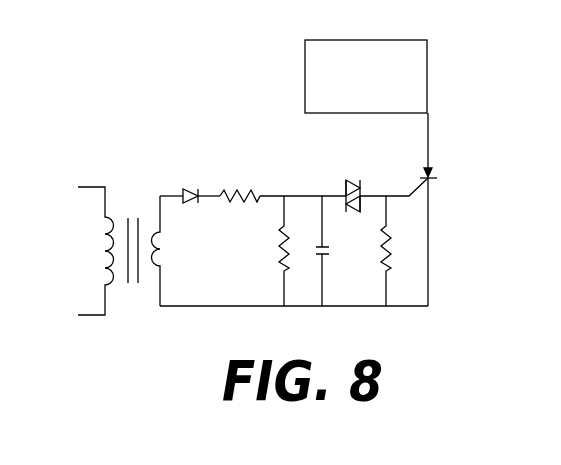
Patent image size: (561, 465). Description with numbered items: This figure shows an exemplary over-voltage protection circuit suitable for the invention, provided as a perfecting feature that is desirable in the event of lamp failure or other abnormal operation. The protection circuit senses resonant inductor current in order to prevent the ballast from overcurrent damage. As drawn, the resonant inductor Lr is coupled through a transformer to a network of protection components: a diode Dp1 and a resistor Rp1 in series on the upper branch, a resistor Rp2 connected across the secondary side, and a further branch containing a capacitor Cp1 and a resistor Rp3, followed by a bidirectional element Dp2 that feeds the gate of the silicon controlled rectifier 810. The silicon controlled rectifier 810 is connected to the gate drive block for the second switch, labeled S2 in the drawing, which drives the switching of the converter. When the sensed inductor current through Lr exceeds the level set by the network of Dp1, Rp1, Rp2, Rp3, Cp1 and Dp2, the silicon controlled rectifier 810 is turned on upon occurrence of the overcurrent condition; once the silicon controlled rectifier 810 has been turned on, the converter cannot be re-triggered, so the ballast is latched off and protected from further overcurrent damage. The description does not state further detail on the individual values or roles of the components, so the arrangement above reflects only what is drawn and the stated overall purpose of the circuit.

The SCR (silicon controlled rectifier) switch 810 is at (429, 168).
The resonant inductor / transformer Lr is at (113, 251).
The diode Dp1 is at (183, 174).
The resistor Rp1 is at (240, 174).
The bidirectional diode (diac) Dp2 is at (329, 179).
The resistor Rp2 is at (253, 251).
The resistor Rp3 is at (360, 251).
The capacitor Cp1 is at (338, 251).
The S2 gate drive S2 is at (366, 76).